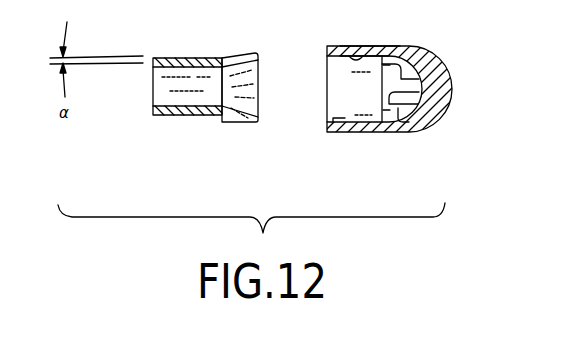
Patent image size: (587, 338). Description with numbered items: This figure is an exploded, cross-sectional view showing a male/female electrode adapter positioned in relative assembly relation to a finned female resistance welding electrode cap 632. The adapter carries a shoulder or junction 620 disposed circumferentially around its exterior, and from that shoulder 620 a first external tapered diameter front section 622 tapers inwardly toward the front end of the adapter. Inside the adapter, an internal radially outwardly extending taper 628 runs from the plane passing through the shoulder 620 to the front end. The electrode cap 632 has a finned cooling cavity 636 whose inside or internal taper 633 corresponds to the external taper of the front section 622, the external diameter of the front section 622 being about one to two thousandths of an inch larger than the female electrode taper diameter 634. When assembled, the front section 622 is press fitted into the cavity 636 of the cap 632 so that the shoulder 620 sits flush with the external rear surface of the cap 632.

The shoulder or junction 620 is at (218, 117).
The front section 622 is at (239, 123).
The internal taper 628 is at (252, 70).
The female electrode cap 632 is at (394, 137).
The internal taper 633 is at (368, 53).
The female electrode taper diameter 634 is at (343, 119).
The finned cooling cavity 636 is at (350, 80).